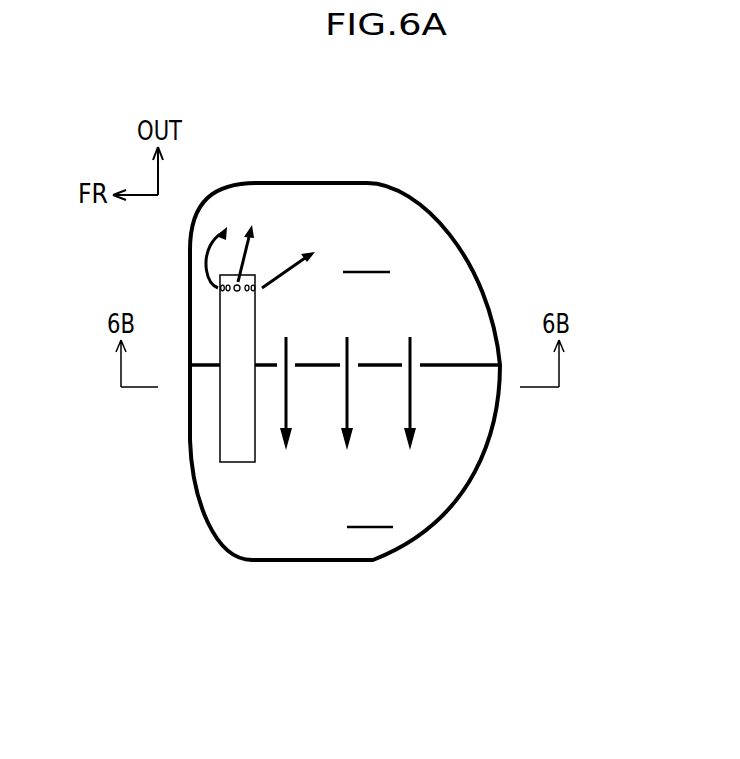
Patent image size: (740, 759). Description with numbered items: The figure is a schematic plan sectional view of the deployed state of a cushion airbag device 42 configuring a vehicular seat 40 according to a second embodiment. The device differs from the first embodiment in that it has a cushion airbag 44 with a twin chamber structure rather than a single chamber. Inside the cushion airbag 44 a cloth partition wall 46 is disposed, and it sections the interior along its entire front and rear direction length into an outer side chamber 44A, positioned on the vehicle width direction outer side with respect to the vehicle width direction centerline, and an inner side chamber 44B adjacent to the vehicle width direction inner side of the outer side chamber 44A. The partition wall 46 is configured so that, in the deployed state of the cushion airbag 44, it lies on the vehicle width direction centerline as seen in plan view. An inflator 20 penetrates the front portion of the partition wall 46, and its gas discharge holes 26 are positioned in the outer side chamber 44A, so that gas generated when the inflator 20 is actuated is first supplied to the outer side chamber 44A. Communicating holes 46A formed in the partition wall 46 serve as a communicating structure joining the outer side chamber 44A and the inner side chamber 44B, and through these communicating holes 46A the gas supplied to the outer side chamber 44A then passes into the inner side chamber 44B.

The inflator 20 is at (237, 450).
The gas discharge holes 26 is at (240, 289).
The vehicular seat 40 is at (345, 330).
The cushion airbag device 42 is at (396, 314).
The cushion airbag 44 is at (331, 207).
The outer side chamber 44A is at (366, 257).
The inner side chamber 44B is at (370, 512).
The partition wall 46 is at (368, 363).
The communicating holes 46A is at (293, 363).